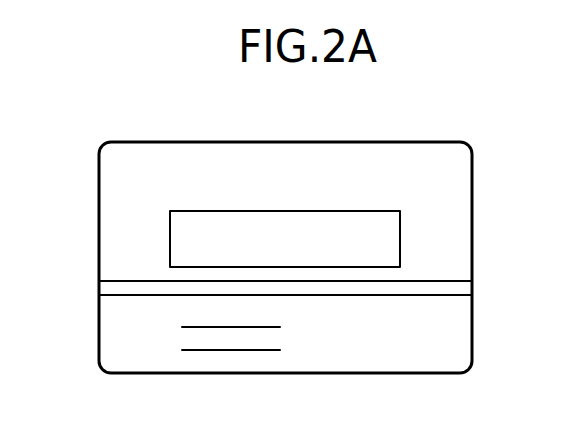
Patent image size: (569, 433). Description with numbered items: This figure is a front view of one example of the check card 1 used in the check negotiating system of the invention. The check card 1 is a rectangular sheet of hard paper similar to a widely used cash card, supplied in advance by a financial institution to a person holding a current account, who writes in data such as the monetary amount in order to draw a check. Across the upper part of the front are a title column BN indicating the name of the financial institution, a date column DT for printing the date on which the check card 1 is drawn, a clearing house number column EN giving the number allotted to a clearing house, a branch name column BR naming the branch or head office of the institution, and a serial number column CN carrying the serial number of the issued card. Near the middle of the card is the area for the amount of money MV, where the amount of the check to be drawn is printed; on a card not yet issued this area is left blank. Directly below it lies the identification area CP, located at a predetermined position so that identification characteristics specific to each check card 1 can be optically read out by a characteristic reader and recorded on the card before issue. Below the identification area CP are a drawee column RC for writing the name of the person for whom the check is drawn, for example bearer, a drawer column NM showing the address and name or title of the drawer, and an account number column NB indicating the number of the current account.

The check card 1 is at (345, 140).
The title column BN is at (125, 153).
The date column DT is at (115, 183).
The clearing house number column EN is at (465, 152).
The branch name column BR is at (455, 183).
The serial number column CN is at (465, 205).
The area for the amount of money MV is at (390, 253).
The identification area CP is at (90, 275).
The drawee column RC is at (160, 356).
The drawer column NM is at (482, 310).
The account number column NB is at (330, 368).